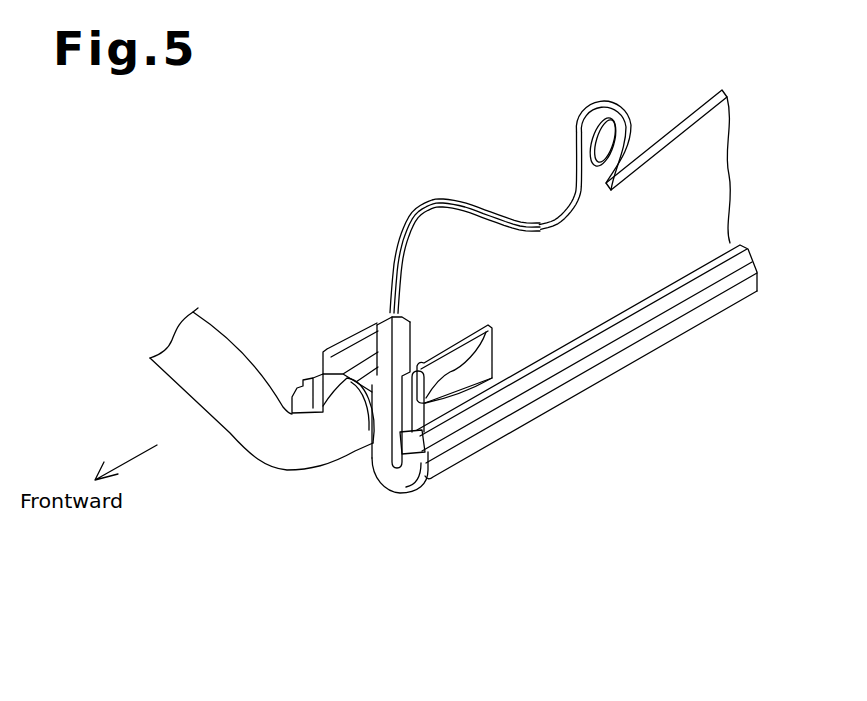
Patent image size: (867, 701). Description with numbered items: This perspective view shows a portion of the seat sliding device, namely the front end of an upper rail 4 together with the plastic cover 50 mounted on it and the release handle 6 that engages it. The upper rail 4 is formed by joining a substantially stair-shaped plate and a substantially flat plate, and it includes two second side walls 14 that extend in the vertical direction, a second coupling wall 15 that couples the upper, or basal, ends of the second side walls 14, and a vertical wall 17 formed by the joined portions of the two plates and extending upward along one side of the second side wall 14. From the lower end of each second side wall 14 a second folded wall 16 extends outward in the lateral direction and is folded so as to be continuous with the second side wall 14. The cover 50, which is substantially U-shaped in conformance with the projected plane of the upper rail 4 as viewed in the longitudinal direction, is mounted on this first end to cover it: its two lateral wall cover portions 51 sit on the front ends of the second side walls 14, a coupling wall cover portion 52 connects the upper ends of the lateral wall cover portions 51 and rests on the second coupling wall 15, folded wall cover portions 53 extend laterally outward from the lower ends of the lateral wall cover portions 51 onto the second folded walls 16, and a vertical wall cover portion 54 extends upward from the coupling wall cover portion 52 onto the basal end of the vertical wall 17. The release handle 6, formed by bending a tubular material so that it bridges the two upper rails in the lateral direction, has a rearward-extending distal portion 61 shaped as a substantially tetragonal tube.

The upper rail 4 is at (527, 240).
The release handle 6 is at (233, 433).
The second side wall 14 is at (637, 287).
The second coupling wall 15 is at (367, 347).
The second folded wall 16 is at (580, 387).
The vertical wall 17 is at (415, 240).
The cover 50 is at (405, 340).
The lateral wall cover portion 51 is at (320, 373).
The coupling wall cover portion 52 is at (353, 362).
The folded wall cover portion 53 is at (413, 480).
The vertical wall cover portion 54 is at (380, 347).
The distal portion 61 is at (365, 438).